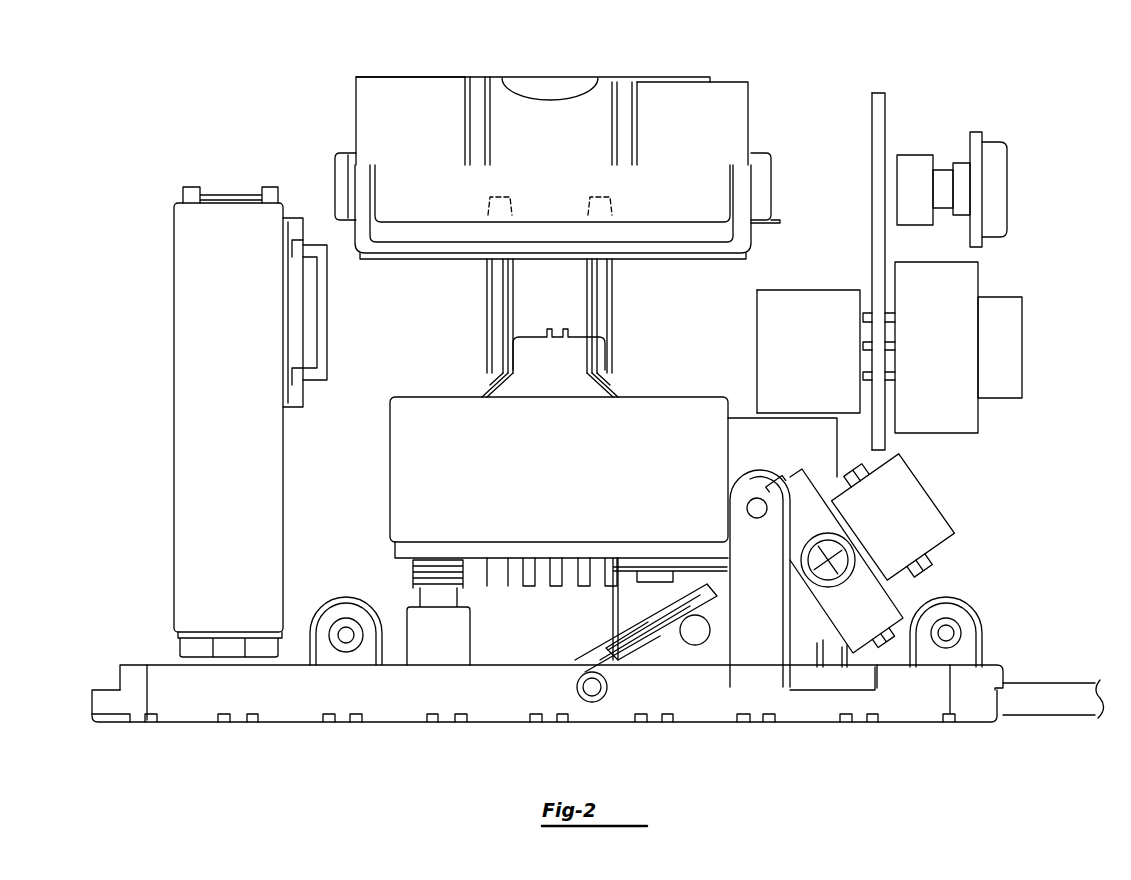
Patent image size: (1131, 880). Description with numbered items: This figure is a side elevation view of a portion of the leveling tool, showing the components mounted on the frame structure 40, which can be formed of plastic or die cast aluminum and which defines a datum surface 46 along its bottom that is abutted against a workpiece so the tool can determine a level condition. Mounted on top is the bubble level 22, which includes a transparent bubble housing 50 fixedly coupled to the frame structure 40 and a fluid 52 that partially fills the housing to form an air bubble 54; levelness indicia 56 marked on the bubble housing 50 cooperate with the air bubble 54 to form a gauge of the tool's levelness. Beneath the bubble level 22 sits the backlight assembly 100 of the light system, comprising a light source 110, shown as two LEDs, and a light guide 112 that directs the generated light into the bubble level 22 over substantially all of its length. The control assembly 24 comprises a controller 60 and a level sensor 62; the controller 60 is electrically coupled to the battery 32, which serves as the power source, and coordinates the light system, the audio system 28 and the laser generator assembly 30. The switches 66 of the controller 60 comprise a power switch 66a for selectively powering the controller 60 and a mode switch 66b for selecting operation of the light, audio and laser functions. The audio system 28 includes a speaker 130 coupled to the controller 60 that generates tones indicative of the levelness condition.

The bubble level 22 is at (515, 93).
The bubble housing 50 is at (403, 78).
The fluid 52 is at (668, 80).
The air bubble 54 is at (539, 86).
The levelness indicia 56 is at (486, 79).
The light guide 112 is at (402, 178).
The light source 110 is at (612, 212).
The backlight assembly 100 is at (422, 215).
The level sensor 62 is at (661, 410).
The speaker 130 is at (760, 305).
The audio system 28 is at (769, 305).
The control assembly 24 is at (850, 268).
The controller 60 is at (873, 178).
The switches 66 is at (1007, 282).
The power switch 66a is at (1010, 196).
The mode switch 66b is at (1020, 352).
The battery 32 is at (178, 368).
The laser generator assembly 30 is at (955, 522).
The frame structure 40 is at (160, 666).
The datum surface 46 is at (398, 724).